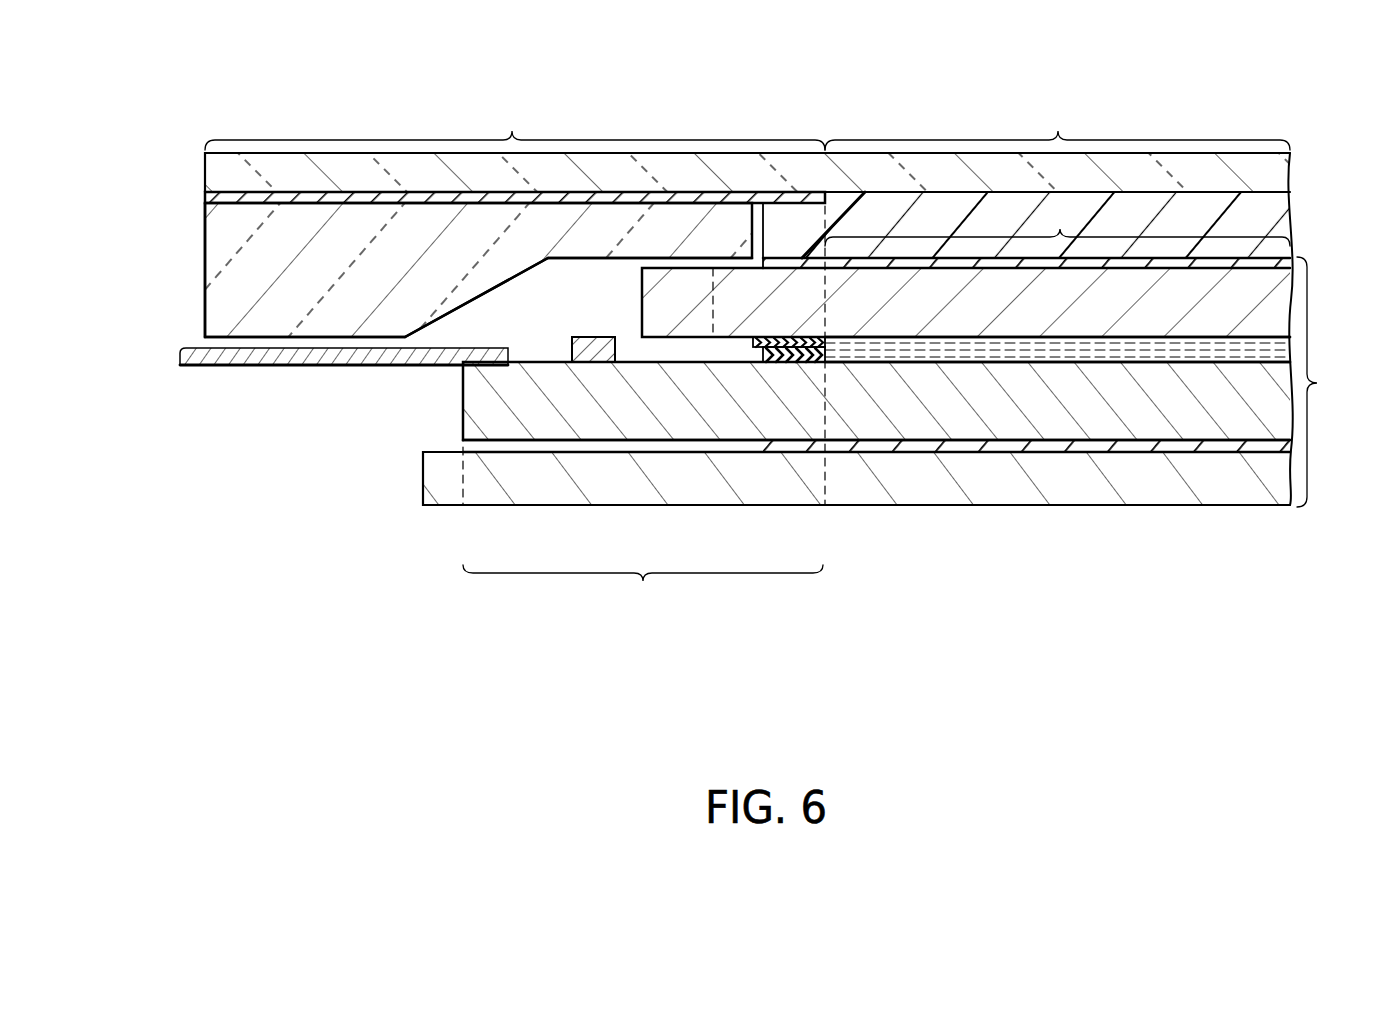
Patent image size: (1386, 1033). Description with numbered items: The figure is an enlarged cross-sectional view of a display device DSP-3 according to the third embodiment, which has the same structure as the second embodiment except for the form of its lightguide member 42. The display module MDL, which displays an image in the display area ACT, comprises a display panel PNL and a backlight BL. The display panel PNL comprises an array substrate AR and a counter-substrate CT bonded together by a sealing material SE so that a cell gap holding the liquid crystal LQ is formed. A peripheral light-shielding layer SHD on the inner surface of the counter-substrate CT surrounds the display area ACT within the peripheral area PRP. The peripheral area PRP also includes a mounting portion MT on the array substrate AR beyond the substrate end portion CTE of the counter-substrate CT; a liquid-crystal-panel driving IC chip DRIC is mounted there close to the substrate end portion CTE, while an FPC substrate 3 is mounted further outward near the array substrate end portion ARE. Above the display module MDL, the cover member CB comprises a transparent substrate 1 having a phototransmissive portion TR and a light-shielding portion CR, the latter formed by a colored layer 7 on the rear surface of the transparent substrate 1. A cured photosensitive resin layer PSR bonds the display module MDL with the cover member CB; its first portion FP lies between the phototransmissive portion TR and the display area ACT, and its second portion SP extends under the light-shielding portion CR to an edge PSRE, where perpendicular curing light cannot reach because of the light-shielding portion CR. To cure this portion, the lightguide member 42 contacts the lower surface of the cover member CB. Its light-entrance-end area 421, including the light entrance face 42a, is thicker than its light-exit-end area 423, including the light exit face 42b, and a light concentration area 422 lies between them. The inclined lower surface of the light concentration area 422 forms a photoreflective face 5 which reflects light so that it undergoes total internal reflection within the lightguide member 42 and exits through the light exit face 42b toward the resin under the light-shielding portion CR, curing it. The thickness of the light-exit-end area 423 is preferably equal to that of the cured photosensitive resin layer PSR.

The transparent substrate 1 is at (1285, 176).
The FPC substrate 3 is at (283, 366).
The photoreflective face 5 is at (522, 277).
The colored layer 7 is at (205, 198).
The lightguide member 42 is at (197, 315).
The light entrance face 42a is at (205, 250).
The light exit face 42b is at (769, 200).
The light-entrance-end area 421 is at (295, 250).
The light concentration area 422 is at (467, 250).
The light-exit-end area 423 is at (668, 232).
The cover member CB is at (200, 166).
The light-shielding portion CR is at (515, 123).
The second portion SP is at (797, 228).
The first portion FP is at (932, 225).
The phototransmissive portion TR is at (1057, 123).
The display area ACT is at (1057, 221).
The mounting portion MT is at (557, 343).
The liquid-crystal-panel driving IC chip DRIC is at (598, 337).
The array substrate end portion ARE is at (456, 396).
The display panel PNL is at (456, 445).
The substrate end portion CTE is at (641, 317).
The edge PSRE is at (750, 248).
The peripheral light-shielding layer SHD is at (770, 363).
The sealing material SE is at (787, 363).
The array substrate AR is at (853, 425).
The liquid crystal LQ is at (890, 352).
The counter-substrate CT is at (933, 320).
The cured photosensitive resin layer PSR is at (990, 248).
The backlight BL is at (1263, 500).
The display module MDL is at (1333, 382).
The peripheral area PRP is at (643, 589).
The display device DSP-3 is at (701, 634).